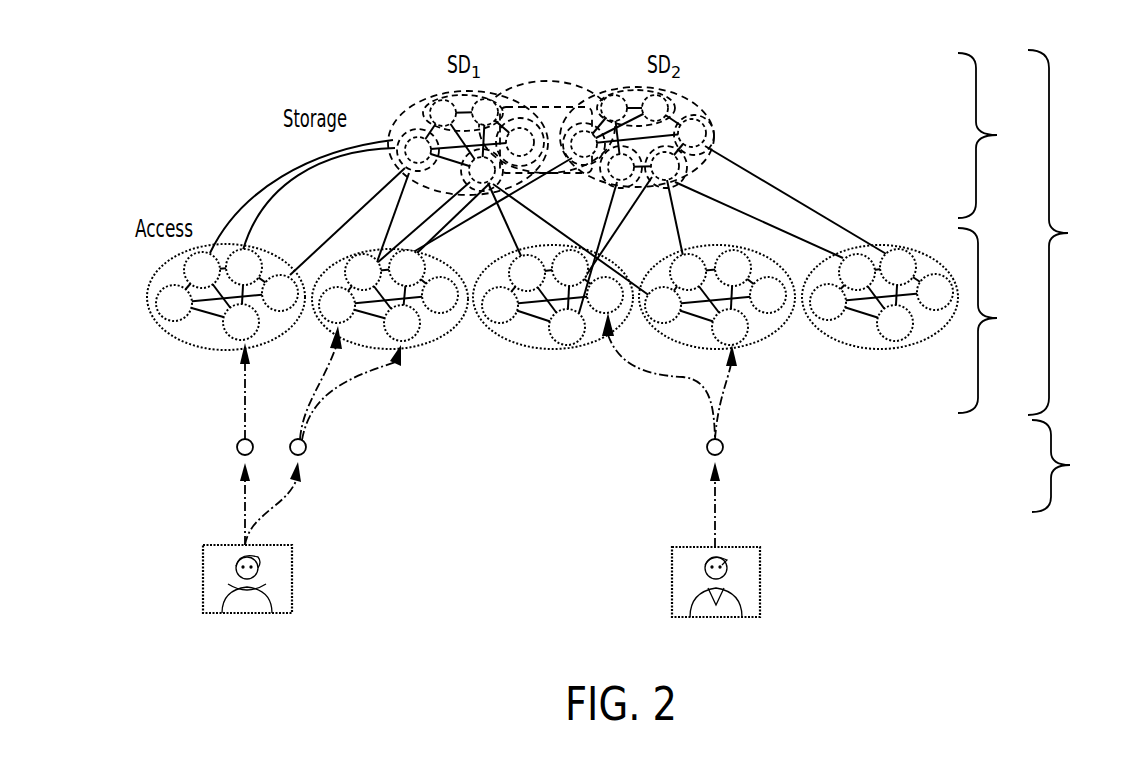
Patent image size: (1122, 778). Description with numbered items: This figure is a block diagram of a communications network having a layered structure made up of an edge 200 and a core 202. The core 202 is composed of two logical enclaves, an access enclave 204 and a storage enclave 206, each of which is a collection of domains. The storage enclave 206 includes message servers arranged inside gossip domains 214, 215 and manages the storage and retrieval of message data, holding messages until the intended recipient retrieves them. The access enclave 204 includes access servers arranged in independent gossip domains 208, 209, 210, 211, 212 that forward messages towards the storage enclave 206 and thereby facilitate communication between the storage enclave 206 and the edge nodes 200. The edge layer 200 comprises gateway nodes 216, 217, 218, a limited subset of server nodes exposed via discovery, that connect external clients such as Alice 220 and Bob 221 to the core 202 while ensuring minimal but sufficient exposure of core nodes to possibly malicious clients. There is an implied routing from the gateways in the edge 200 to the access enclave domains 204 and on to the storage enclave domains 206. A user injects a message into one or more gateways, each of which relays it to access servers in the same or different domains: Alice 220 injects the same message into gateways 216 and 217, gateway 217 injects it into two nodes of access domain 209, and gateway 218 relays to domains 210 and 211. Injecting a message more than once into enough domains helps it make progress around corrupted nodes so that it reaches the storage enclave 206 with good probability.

The edge layer 200 is at (1068, 466).
The core 202 is at (1067, 232).
The access enclave 204 is at (997, 320).
The storage enclave 206 is at (995, 135).
The access domain 208 is at (205, 350).
The access domain 209 is at (407, 350).
The access domain 210 is at (537, 352).
The access domain 211 is at (757, 348).
The access domain 212 is at (862, 350).
The storage domain 214 is at (410, 102).
The storage domain 215 is at (718, 129).
The gateway node 216 is at (237, 451).
The gateway node 217 is at (307, 450).
The gateway node 218 is at (707, 450).
The client Alice 220 is at (292, 577).
The client Bob 221 is at (672, 578).